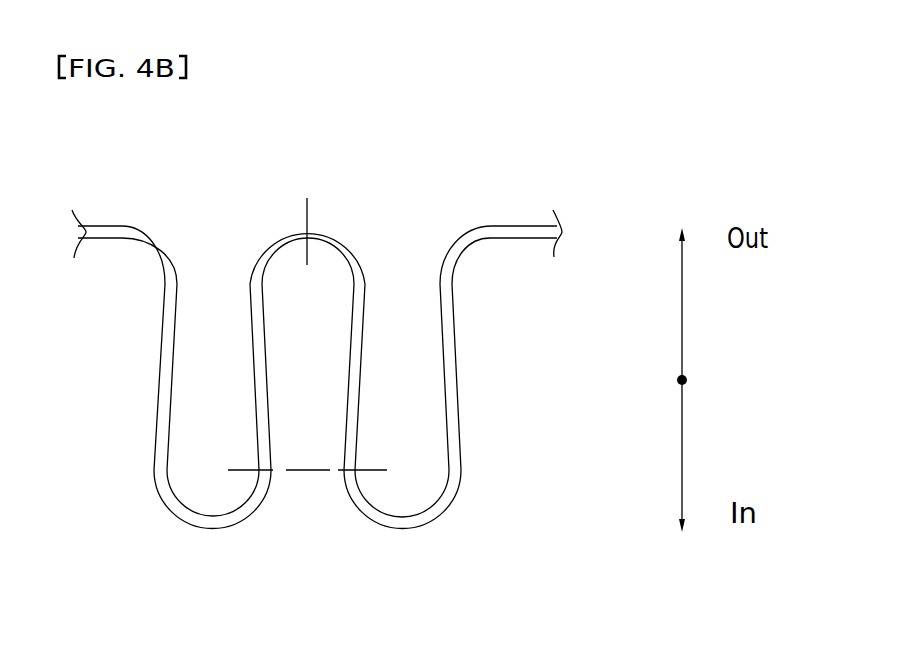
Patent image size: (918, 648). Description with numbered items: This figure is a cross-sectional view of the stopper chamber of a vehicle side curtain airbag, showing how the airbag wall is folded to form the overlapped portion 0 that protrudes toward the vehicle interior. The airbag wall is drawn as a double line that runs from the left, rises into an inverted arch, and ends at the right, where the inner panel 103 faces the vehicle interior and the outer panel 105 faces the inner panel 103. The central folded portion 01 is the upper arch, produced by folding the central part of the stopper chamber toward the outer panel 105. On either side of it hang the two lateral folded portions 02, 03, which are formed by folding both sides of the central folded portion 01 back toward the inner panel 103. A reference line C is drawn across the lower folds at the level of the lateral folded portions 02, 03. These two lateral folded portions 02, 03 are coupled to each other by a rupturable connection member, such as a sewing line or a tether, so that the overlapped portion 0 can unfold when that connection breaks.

The overlapped portion 0 is at (352, 364).
The central folded portion 01 is at (325, 228).
The lateral folded portion 02 is at (227, 525).
The lateral folded portion 03 is at (392, 525).
The inner panel 103 is at (518, 238).
The outer panel 105 is at (528, 227).
The bend center line C is at (377, 470).